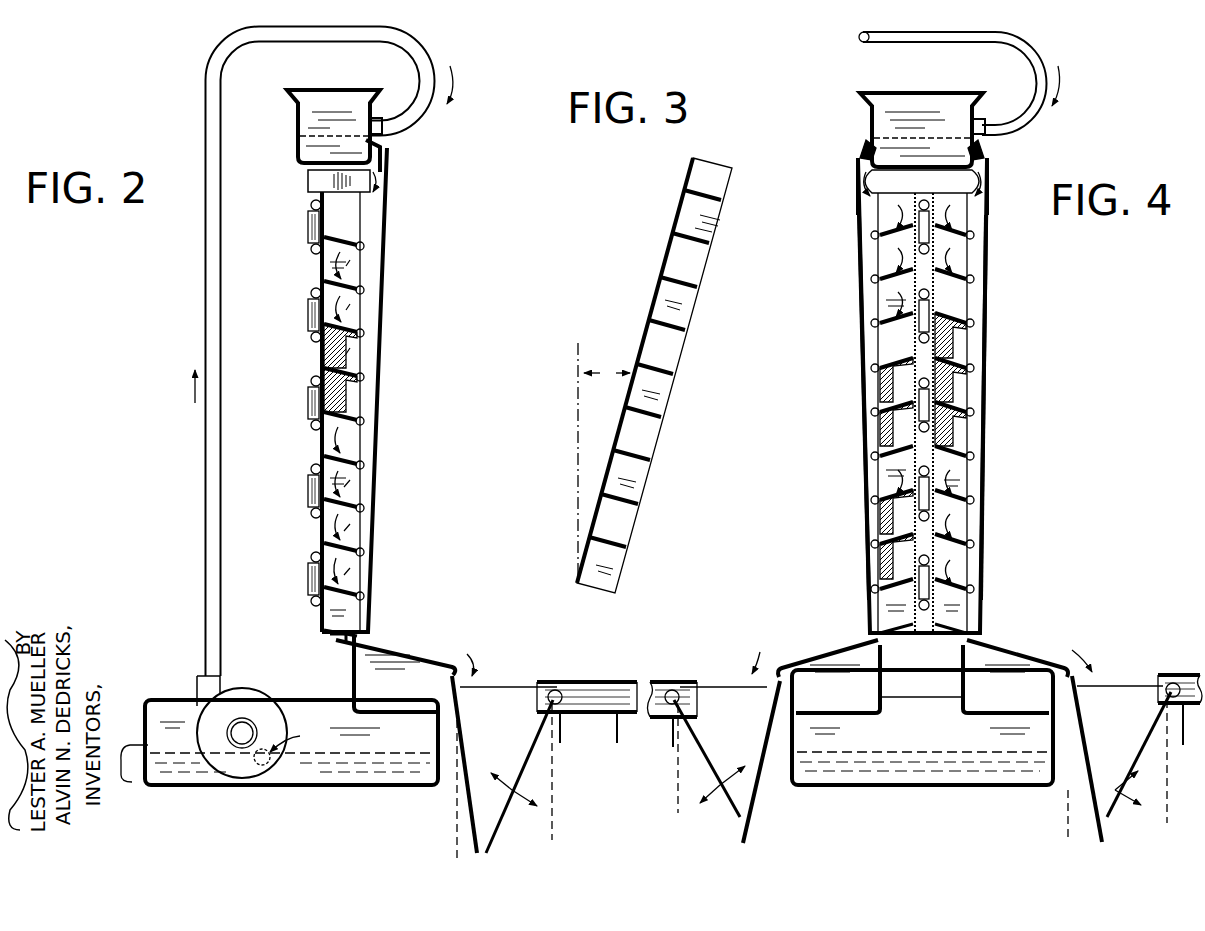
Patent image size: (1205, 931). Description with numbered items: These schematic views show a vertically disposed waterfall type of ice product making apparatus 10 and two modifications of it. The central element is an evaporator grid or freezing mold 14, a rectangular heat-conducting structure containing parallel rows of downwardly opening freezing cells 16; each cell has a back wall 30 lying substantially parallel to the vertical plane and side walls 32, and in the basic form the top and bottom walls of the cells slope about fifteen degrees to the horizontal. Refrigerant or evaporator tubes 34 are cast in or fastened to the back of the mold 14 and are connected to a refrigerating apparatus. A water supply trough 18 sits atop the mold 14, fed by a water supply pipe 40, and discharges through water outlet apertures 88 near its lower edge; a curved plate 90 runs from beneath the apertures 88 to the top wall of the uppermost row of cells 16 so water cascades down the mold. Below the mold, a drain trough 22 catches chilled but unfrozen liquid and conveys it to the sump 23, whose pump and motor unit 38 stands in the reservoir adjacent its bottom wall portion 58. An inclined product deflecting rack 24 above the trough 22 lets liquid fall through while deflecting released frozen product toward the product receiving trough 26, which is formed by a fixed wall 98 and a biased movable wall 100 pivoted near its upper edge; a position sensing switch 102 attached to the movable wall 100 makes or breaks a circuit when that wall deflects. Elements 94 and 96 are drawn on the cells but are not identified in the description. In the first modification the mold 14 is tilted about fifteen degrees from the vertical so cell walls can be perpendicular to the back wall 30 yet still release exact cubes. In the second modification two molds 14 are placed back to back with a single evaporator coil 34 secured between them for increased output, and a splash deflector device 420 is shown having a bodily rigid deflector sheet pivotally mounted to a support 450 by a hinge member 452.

In FIG. 2, the ice product making apparatus 10 is at (370, 390).
In FIG. 4, the ice product making apparatus 10 is at (936, 396).
In FIG. 2, the freezing mold 14 is at (331, 436).
In FIG. 3, the freezing mold 14 is at (662, 375).
In FIG. 4, the freezing mold 14 is at (924, 419).
In FIG. 2, the freezing cells 16 is at (362, 526).
In FIG. 3, the freezing cells 16 is at (674, 388).
In FIG. 4, the freezing cells 16 is at (880, 488).
In FIG. 2, the water supply trough 18 is at (318, 104).
In FIG. 4, the water supply trough 18 is at (912, 104).
In FIG. 2, the drain trough 22 is at (375, 708).
In FIG. 4, the drain trough 22 is at (960, 711).
In FIG. 2, the sump assembly 23 is at (173, 778).
In FIG. 4, the sump assembly 23 is at (935, 786).
In FIG. 2, the product deflecting rack 24 is at (398, 653).
In FIG. 4, the product deflecting rack 24 is at (830, 652).
In FIG. 2, the product receiving trough 26 is at (482, 687).
In FIG. 4, the product receiving trough 26 is at (741, 664).
In FIG. 2, the back wall 30 is at (324, 280).
In FIG. 4, the back wall 30 is at (913, 364).
In FIG. 2, the side walls 32 is at (362, 258).
In FIG. 4, the side walls 32 is at (965, 262).
In FIG. 2, the evaporator tubes 34 is at (310, 247).
In FIG. 4, the evaporator tubes 34 is at (916, 270).
In FIG. 2, the pump and motor unit 38 is at (270, 686).
In FIG. 2, the water supply pipe 40 is at (205, 256).
In FIG. 4, the water supply pipe 40 is at (862, 45).
In FIG. 2, the bottom wall portion 58 is at (300, 788).
In FIG. 4, the bottom wall portion 58 is at (940, 788).
In FIG. 2, the water outlet apertures 88 is at (388, 167).
In FIG. 4, the water outlet apertures 88 is at (857, 166).
In FIG. 2, the curved plate 90 is at (320, 183).
In FIG. 4, the curved plate 90 is at (870, 185).
In FIG. 2, the tray edge 94 is at (366, 454).
In FIG. 3, the tray edge 94 is at (651, 414).
In FIG. 4, the tray edge 94 is at (950, 458).
In FIG. 2, the tray lip 96 is at (362, 496).
In FIG. 3, the tray lip 96 is at (643, 448).
In FIG. 4, the tray lip 96 is at (948, 492).
In FIG. 2, the fixed wall 98 is at (458, 796).
In FIG. 4, the fixed wall 98 is at (758, 796).
In FIG. 2, the movable wall 100 is at (500, 809).
In FIG. 4, the movable wall 100 is at (732, 800).
In FIG. 2, the position sensing switch 102 is at (592, 690).
In FIG. 4, the position sensing switch 102 is at (676, 678).
In FIG. 4, the splash deflector device 420 is at (856, 322).
In FIG. 4, the support 450 is at (866, 145).
In FIG. 4, the hinge member 452 is at (990, 150).